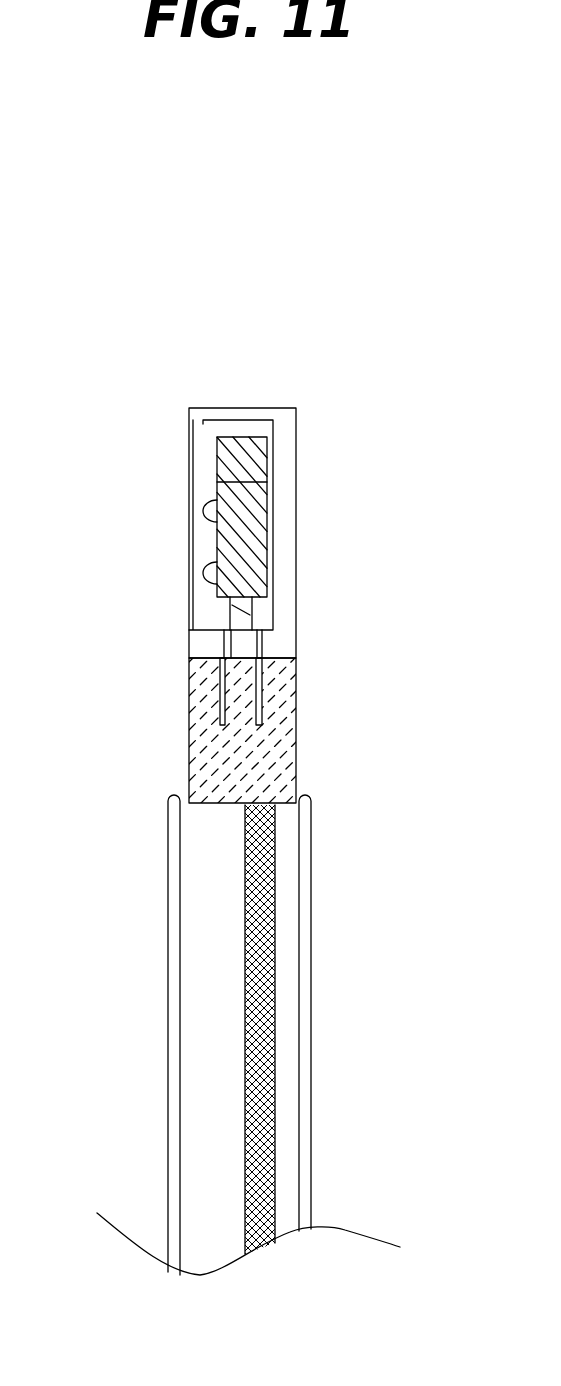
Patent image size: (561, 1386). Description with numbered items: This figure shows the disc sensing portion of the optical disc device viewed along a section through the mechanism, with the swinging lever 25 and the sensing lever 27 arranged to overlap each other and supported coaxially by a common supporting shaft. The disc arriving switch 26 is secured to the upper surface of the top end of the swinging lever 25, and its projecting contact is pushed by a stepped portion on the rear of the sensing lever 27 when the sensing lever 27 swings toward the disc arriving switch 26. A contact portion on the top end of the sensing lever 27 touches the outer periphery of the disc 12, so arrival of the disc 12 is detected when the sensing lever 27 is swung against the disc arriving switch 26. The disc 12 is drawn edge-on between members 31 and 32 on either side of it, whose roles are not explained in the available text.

The swinging lever 25 is at (352, 442).
The disc arriving switch 26 is at (188, 476).
The sensing lever 27 is at (308, 745).
The disc 12 is at (275, 961).
The first cover plate 31 is at (312, 1117).
The second cover plate 32 is at (168, 1012).